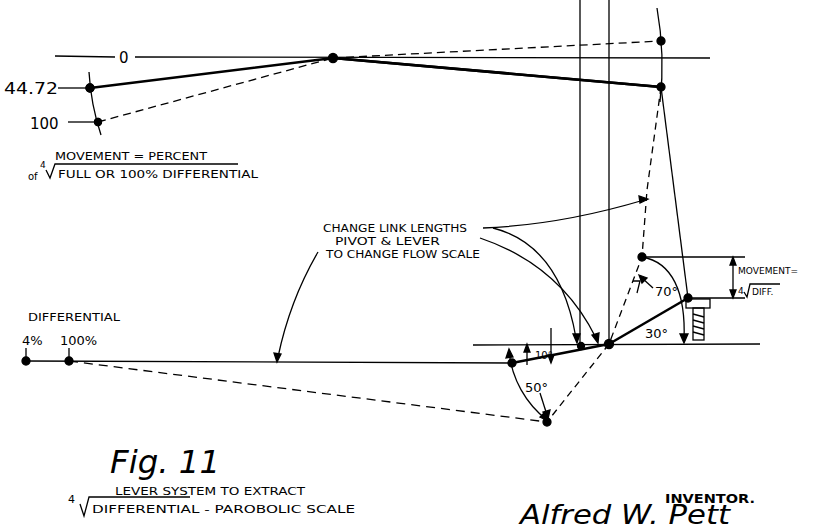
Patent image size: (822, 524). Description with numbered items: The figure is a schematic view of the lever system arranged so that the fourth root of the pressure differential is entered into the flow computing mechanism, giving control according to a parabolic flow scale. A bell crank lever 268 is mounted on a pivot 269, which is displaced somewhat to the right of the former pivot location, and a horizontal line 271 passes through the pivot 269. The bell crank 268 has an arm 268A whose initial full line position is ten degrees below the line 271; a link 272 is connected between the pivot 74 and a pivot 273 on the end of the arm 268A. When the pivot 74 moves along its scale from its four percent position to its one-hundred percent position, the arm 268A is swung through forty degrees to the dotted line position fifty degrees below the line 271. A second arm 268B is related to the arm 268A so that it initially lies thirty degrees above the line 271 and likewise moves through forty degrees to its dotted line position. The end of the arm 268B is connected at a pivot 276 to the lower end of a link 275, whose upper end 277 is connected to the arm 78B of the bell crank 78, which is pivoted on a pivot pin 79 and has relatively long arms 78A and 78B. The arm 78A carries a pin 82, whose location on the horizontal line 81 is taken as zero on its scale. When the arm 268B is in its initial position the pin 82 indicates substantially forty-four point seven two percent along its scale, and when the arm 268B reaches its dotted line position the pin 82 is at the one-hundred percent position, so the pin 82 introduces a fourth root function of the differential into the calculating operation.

The pivot 74 is at (26, 363).
The bell crank 78 is at (443, 75).
The arm 78A is at (167, 78).
The arm 78B is at (488, 72).
The pivot pin 79 is at (334, 56).
The horizontal line 81 is at (510, 52).
The pin 82 is at (92, 90).
The bell crank lever 268 is at (582, 350).
The arm 268A is at (529, 368).
The arm 268B is at (689, 296).
The pivot 269 is at (611, 348).
The horizontal line 271 is at (480, 345).
The link 272 is at (319, 363).
The pivot 273 is at (510, 366).
The link 275 is at (676, 185).
The pivot 276 is at (645, 255).
The upper end 277 is at (663, 41).